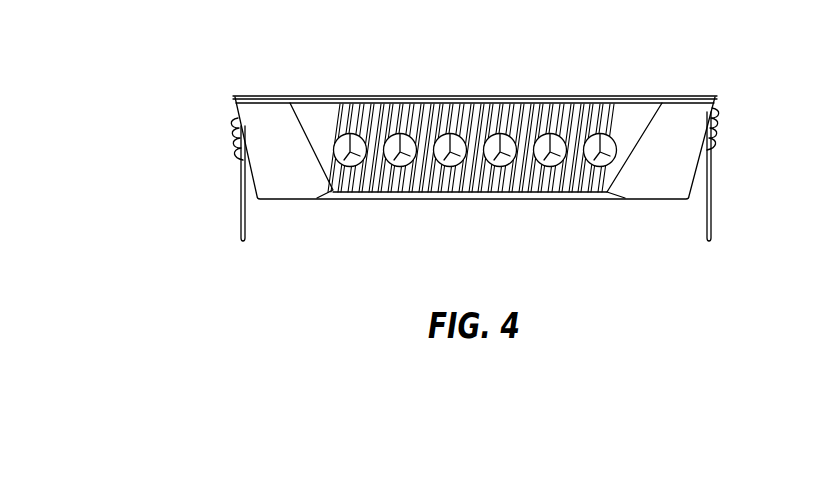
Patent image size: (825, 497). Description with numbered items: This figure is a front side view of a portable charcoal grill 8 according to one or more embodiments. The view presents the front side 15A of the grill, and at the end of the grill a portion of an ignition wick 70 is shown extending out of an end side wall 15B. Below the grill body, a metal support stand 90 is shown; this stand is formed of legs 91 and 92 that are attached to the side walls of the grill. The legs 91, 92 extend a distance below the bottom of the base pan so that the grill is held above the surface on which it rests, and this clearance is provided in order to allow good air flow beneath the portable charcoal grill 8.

The portable charcoal grill 8 is at (422, 84).
The front side 15A is at (620, 115).
The end side wall 15B is at (236, 112).
The ignition wick 70 is at (718, 123).
The metal support stand 90 is at (724, 222).
The leg 91 is at (713, 213).
The leg 92 is at (240, 215).